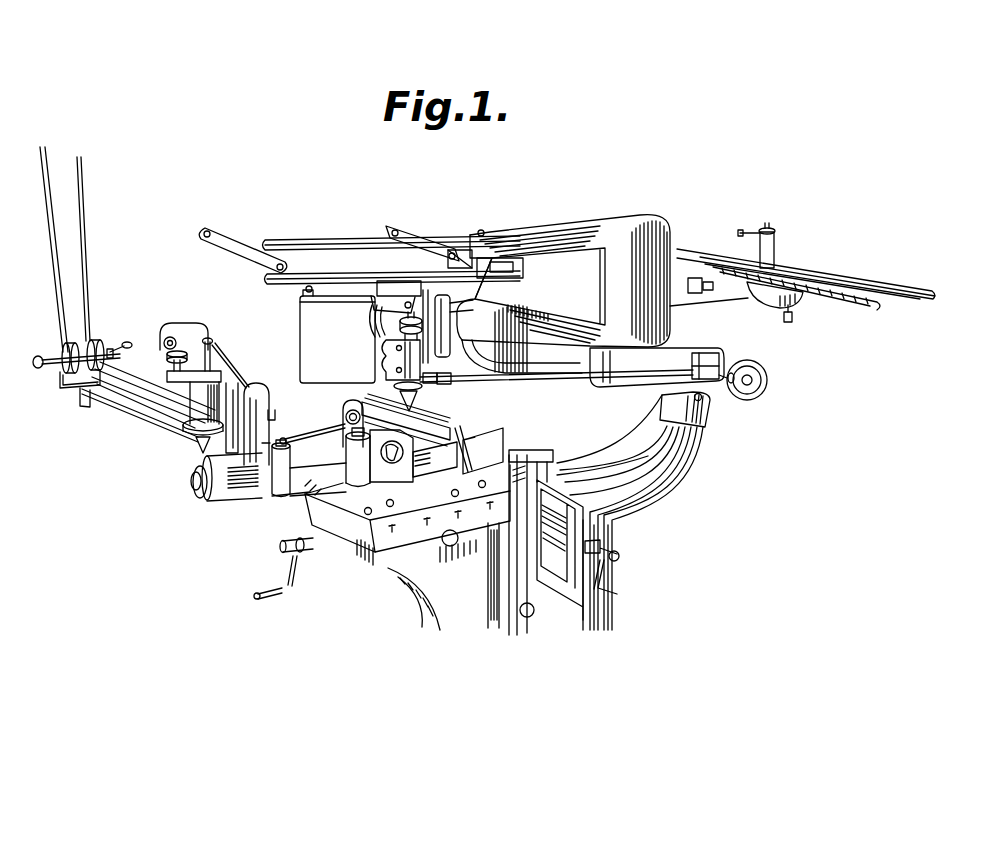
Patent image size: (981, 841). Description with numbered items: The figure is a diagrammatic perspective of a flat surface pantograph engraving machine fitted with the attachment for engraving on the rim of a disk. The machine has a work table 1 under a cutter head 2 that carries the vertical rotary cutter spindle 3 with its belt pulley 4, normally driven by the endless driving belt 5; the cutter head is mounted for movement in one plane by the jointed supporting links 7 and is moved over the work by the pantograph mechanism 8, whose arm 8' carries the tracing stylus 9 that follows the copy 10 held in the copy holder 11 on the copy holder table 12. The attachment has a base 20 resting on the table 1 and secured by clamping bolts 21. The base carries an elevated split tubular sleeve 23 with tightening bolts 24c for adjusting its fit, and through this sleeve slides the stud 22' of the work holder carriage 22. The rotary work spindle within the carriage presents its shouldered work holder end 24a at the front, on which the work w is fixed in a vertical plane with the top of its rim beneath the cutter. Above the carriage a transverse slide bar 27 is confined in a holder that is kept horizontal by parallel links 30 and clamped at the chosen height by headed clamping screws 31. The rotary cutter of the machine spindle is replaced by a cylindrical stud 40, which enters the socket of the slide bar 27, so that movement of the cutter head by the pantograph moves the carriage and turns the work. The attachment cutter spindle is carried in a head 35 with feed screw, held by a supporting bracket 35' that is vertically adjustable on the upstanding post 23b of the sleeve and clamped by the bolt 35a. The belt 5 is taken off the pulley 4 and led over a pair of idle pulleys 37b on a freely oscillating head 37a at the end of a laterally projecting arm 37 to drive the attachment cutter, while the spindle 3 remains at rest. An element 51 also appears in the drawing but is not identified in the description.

The work table 1 is at (408, 527).
The cutter head 2 is at (423, 372).
The rotary cutter spindle 3 is at (413, 399).
The belt pulley 4 is at (394, 388).
The endless driving belt 5 is at (88, 280).
The jointed supporting links 7 is at (302, 326).
The pantograph mechanism 8 is at (359, 238).
The pantograph arm 8' is at (696, 283).
The tracing stylus 9 is at (770, 260).
The copy 10 is at (842, 295).
The copy holder 11 is at (877, 305).
The copy holder table 12 is at (773, 297).
The attachment base 20 is at (313, 517).
The clamping bolts 21 is at (396, 501).
The work holder carriage 22 is at (487, 445).
The slide stud 22' is at (214, 508).
The tubular sleeve 23 is at (345, 452).
The upstanding post 23b is at (251, 392).
The work holder end 24a is at (191, 482).
The tightening bolts 24c is at (343, 426).
The slide bar 27 is at (462, 421).
The parallel links 30 is at (488, 447).
The clamping screws 31 is at (358, 410).
The cutter spindle head 35 is at (180, 390).
The supporting bracket 35' is at (239, 363).
The clamping bolt 35a is at (272, 410).
The laterally projecting arm 37 is at (124, 410).
The pulley head 37a is at (62, 381).
The idle pulleys 37b is at (92, 346).
The cylindrical stud 40 is at (442, 414).
The cam 51 is at (376, 462).
The work w is at (204, 498).